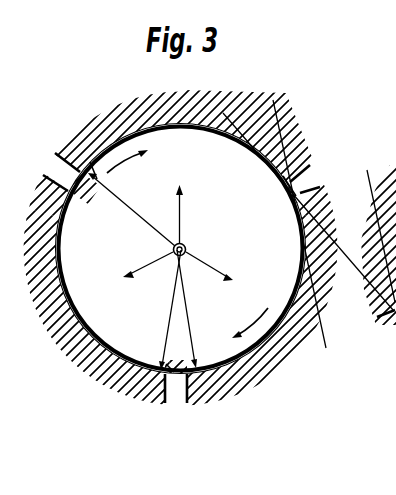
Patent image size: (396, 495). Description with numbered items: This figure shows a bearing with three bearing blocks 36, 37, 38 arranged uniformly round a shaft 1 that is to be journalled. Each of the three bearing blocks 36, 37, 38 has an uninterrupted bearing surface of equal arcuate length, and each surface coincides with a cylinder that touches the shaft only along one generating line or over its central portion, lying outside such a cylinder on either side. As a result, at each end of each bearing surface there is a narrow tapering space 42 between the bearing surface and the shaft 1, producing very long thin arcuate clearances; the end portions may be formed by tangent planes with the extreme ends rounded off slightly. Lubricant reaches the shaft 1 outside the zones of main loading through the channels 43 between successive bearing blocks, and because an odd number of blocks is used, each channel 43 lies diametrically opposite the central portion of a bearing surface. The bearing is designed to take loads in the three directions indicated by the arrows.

The shaft 1 is at (73, 243).
The bearing block 36 is at (145, 116).
The bearing block 37 is at (60, 318).
The bearing block 38 is at (278, 345).
The narrow tapering space 42 is at (92, 166).
The channel 43 is at (60, 171).